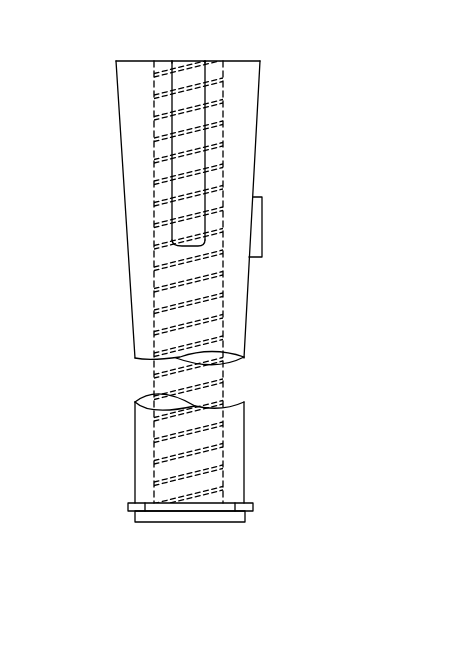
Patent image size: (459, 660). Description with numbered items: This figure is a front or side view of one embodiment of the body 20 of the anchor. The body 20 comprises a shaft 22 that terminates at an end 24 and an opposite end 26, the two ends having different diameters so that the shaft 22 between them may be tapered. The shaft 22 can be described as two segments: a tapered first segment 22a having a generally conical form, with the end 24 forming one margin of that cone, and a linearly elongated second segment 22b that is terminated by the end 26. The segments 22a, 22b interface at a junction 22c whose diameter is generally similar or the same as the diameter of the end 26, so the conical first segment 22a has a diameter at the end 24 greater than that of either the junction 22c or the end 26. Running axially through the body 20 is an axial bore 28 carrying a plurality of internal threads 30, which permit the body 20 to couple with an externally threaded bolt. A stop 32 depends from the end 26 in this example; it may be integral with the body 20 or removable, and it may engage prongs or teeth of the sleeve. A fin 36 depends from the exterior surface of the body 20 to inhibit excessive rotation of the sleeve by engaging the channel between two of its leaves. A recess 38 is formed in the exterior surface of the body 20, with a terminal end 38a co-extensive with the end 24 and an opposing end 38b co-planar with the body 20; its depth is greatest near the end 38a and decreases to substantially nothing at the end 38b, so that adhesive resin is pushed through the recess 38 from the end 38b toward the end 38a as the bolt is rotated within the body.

The body 20 is at (54, 69).
The shaft 22 is at (114, 332).
The tapered first segment 22a is at (141, 196).
The linearly elongated second segment 22b is at (145, 435).
The junction 22c is at (245, 310).
The end 24 is at (141, 60).
The end 26 is at (228, 522).
The axial bore 28 is at (156, 150).
The internal threads 30 is at (212, 273).
The stop 32 is at (128, 507).
The fin 36 is at (262, 230).
The recess 38 is at (195, 108).
The terminal end 38a is at (188, 61).
The opposing end 38b is at (171, 246).